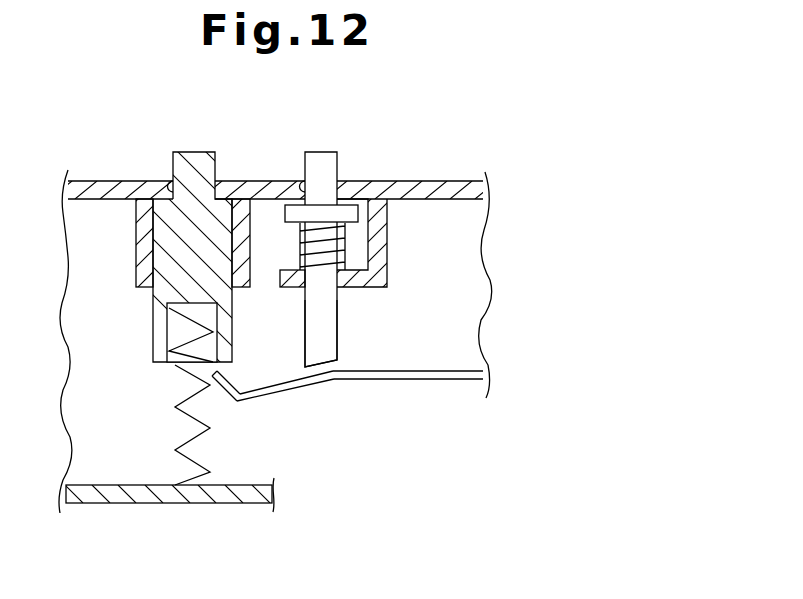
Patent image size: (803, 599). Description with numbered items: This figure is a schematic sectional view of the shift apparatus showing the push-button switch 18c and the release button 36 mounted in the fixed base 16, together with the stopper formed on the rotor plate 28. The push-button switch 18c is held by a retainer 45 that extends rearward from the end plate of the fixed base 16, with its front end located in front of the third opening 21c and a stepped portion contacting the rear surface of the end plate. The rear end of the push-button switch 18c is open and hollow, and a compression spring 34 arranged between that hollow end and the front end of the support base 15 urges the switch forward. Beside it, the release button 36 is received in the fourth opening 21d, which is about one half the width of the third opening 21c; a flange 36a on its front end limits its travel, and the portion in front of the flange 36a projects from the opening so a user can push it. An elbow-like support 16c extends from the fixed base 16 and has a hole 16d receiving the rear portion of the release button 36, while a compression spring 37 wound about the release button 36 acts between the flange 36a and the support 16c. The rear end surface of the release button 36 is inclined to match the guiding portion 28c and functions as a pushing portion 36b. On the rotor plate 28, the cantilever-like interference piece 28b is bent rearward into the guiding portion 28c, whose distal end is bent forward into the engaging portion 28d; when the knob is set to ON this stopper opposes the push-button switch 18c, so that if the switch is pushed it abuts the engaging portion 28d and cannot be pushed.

The support base 15 is at (225, 497).
The fixed base 16 is at (462, 185).
The elbow-like support 16c is at (387, 258).
The hole 16d is at (330, 290).
The push-button switch 18c is at (200, 165).
The third opening 21c is at (172, 185).
The fourth opening 21d is at (303, 185).
The rotor plate 28 is at (349, 429).
The interference piece 28b is at (393, 380).
The guiding portion 28c is at (303, 384).
The engaging portion 28d is at (236, 404).
The compression spring 34 is at (174, 406).
The release button 36 is at (325, 162).
The flange 36a is at (358, 212).
The pushing portion 36b is at (332, 345).
The compression spring 37 is at (299, 249).
The retainer 45 is at (137, 245).